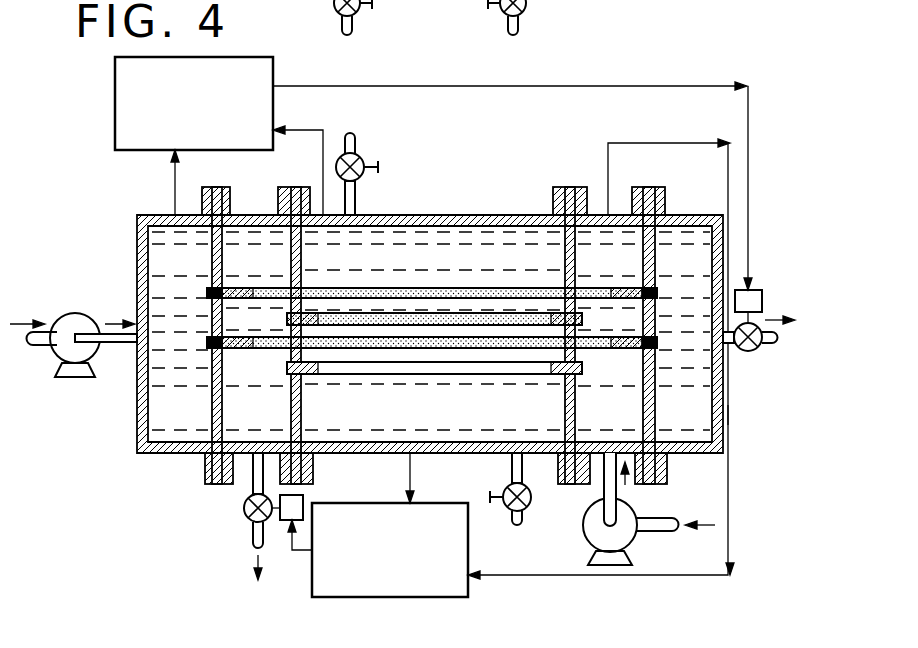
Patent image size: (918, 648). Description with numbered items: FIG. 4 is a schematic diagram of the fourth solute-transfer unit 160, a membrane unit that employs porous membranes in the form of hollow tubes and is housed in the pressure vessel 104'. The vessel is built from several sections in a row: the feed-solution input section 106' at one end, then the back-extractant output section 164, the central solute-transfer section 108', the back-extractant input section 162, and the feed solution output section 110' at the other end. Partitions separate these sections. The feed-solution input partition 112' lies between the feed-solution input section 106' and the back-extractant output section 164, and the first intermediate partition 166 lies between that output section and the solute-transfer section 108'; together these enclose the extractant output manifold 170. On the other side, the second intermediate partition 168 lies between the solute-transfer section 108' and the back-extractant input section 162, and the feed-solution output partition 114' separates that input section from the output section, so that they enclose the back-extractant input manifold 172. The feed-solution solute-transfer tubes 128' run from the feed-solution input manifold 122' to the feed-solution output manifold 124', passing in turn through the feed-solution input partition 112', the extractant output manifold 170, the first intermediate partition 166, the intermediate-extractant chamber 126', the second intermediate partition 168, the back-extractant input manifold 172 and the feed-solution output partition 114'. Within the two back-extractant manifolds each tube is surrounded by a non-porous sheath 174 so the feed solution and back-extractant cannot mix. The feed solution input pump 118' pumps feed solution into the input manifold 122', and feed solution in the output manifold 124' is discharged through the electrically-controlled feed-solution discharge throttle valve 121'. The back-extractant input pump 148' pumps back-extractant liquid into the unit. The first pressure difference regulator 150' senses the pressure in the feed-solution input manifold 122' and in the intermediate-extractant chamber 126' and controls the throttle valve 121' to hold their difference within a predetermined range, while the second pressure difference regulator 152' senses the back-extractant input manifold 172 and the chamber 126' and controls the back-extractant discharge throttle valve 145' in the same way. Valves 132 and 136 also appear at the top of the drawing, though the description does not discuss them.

The fourth solute-transfer unit 160 is at (143, 460).
The feed-solution input section 106' is at (145, 193).
The solute-transfer section 108' is at (431, 193).
The pressure vessel 104' is at (697, 193).
The back-extractant output section 164 is at (259, 214).
The back-extractant input section 162 is at (596, 215).
The feed-solution input partition 112' is at (188, 335).
The first intermediate partition 166 is at (301, 400).
The second intermediate partition 168 is at (565, 405).
The feed-solution output partition 114' is at (681, 335).
The feed-solution input manifold 122' is at (184, 259).
The feed-solution output manifold 124' is at (686, 259).
The extractant output manifold 170 is at (275, 418).
The back-extractant input manifold 172 is at (630, 415).
The intermediate-extractant chamber 126' is at (440, 403).
The feed-solution solute-transfer tubes 128' is at (432, 272).
The non-porous sheath 174 is at (248, 286).
The feed solution input pump 118' is at (73, 319).
The feed-solution discharge throttle valve 121' is at (759, 341).
The feed solution output section 110' is at (760, 413).
The first pressure difference regulator 150' is at (406, 173).
The second pressure difference regulator 152' is at (378, 525).
The back-extractant discharge throttle valve 145' is at (236, 516).
The back-extractant input pump 148' is at (620, 509).
The valve 132 is at (334, 8).
The valve 136 is at (526, 8).